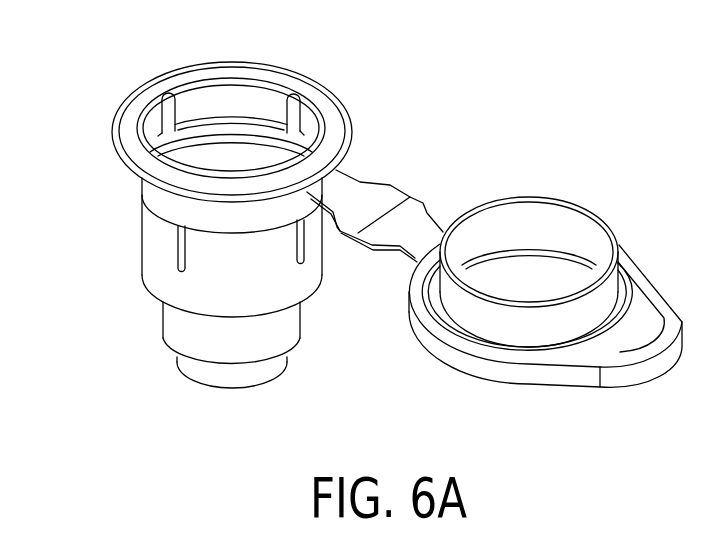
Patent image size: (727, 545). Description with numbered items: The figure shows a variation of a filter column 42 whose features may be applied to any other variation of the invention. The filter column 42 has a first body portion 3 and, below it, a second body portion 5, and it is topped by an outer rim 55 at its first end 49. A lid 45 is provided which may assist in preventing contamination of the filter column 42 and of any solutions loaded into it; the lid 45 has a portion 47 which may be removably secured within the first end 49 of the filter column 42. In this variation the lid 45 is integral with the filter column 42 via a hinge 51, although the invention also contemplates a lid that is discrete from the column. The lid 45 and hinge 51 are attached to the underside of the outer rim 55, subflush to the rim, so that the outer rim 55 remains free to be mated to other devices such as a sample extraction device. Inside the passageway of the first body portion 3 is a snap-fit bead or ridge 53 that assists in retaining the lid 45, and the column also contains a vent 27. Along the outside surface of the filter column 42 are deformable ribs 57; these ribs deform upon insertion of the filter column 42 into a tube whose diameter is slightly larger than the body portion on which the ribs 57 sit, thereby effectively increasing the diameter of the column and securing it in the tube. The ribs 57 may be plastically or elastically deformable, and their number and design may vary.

The filter column 42 is at (411, 93).
The first end 49 is at (157, 68).
The outer rim 55 is at (110, 123).
The snap-fit bead or ridge 53 is at (250, 120).
The vent 27 is at (293, 103).
The first body portion 3 is at (148, 196).
The deformable ribs 57 is at (178, 237).
The second body portion 5 is at (175, 285).
The hinge 51 is at (373, 255).
The lid 45 is at (589, 191).
The portion 47 is at (513, 323).